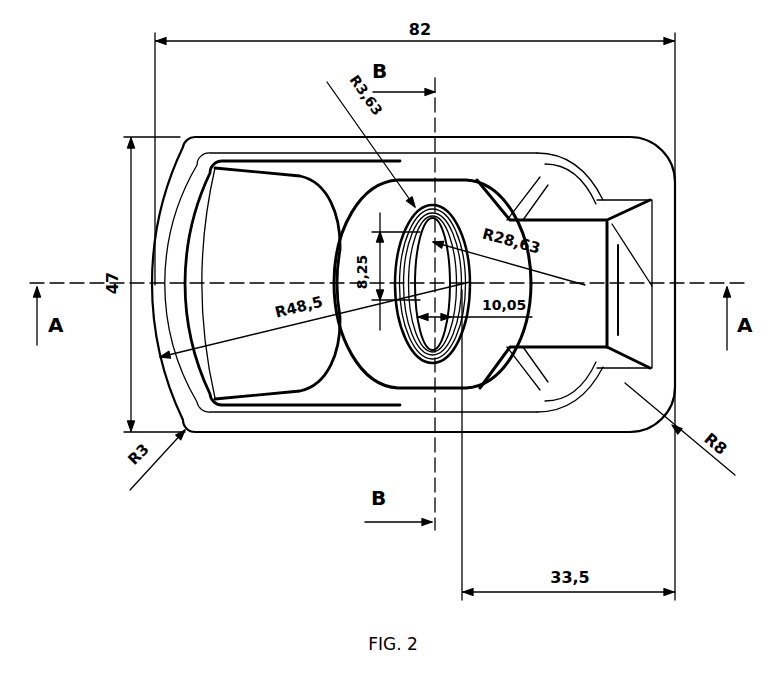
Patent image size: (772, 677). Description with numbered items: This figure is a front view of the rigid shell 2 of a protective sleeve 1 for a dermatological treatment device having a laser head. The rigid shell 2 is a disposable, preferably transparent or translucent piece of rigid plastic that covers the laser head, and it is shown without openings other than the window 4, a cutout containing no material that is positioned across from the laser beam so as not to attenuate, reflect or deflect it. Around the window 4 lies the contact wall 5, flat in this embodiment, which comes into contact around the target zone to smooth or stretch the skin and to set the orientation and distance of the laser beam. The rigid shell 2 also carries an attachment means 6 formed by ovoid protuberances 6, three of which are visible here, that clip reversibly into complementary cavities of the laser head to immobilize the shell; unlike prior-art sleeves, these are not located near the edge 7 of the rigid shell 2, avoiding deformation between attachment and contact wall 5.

The protective sleeve 1 is at (381, 262).
The rigid shell 2 is at (414, 266).
The window 4 is at (441, 262).
The contact wall 5 is at (573, 265).
The attachment means (protuberance) 6 is at (437, 228).
The edge 7 is at (153, 240).